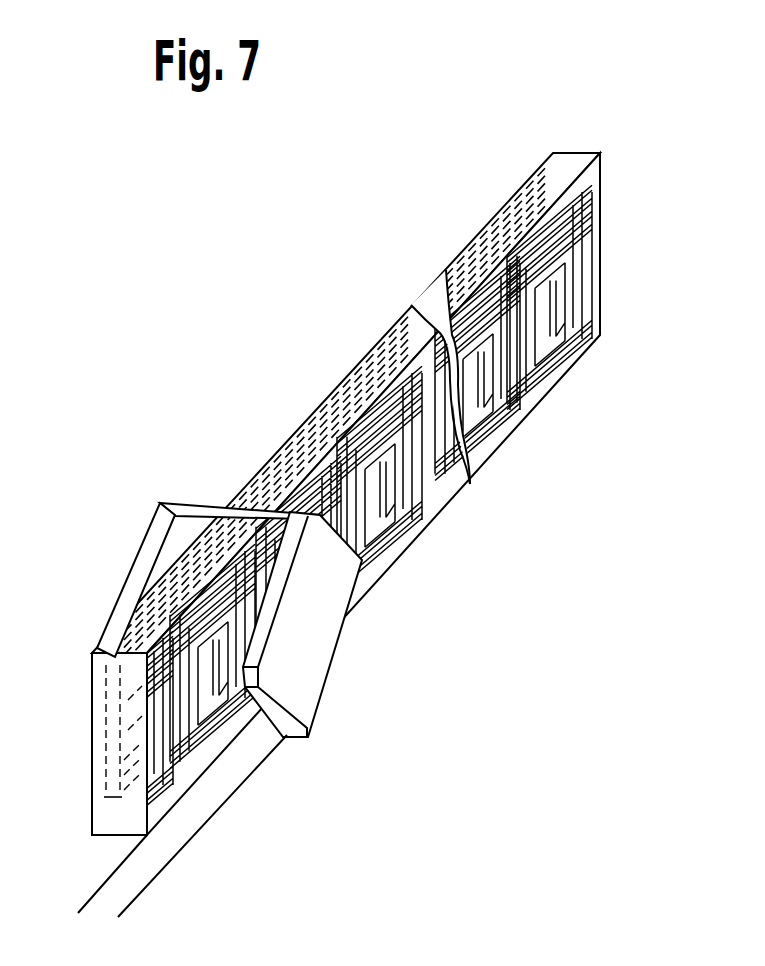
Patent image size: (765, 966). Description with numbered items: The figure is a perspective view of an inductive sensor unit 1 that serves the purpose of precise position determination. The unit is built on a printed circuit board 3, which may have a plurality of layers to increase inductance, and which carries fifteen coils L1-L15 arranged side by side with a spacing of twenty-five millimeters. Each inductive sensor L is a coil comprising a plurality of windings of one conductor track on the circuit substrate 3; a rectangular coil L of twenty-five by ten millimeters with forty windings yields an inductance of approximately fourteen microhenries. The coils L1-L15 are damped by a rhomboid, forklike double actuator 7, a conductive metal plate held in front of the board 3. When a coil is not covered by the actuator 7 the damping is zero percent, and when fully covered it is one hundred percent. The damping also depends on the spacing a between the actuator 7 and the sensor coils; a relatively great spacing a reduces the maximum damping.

The inductive sensor unit 1 is at (320, 308).
The printed circuit board 3 is at (553, 152).
The double actuator 7 is at (150, 552).
The inductive sensor L is at (400, 547).
The coils L1-L15 is at (535, 400).
The spacing a is at (40, 905).